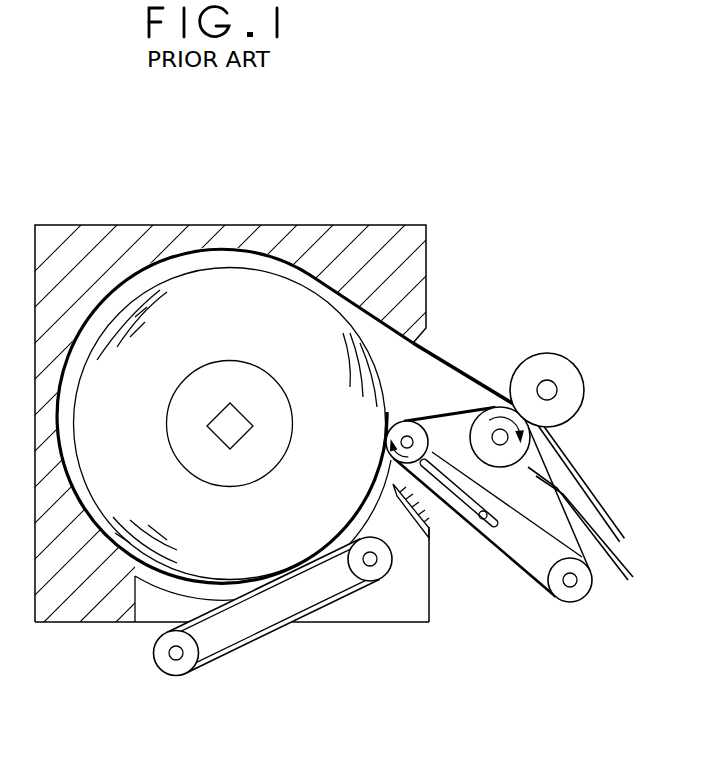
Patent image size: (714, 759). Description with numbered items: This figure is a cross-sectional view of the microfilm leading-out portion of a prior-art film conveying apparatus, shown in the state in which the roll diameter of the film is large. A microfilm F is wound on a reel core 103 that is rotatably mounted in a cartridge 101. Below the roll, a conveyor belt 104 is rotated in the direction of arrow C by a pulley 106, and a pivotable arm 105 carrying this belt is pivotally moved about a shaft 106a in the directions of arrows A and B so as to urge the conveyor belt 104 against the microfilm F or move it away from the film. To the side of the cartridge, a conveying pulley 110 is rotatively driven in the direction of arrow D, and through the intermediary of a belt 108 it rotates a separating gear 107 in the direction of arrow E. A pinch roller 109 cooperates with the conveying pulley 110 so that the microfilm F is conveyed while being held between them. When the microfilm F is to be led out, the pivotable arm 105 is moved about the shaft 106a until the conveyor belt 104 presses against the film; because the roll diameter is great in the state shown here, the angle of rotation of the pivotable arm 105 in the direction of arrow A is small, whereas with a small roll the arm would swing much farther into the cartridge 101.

The cartridge 101 is at (133, 232).
The reel core 103 is at (257, 380).
The microfilm F is at (230, 273).
The conveyor belt 104 is at (343, 600).
The pivotable arm 105 is at (237, 635).
The pulley 106 is at (183, 667).
The shaft 106a is at (172, 657).
The separating gear 107 is at (410, 412).
The belt 108 is at (465, 408).
The pinch roller 109 is at (575, 365).
The conveying pulley 110 is at (557, 443).
The arrow A is at (287, 657).
The arrow B is at (291, 668).
The arrow C is at (340, 541).
The arrow D is at (500, 437).
The arrow E is at (407, 442).